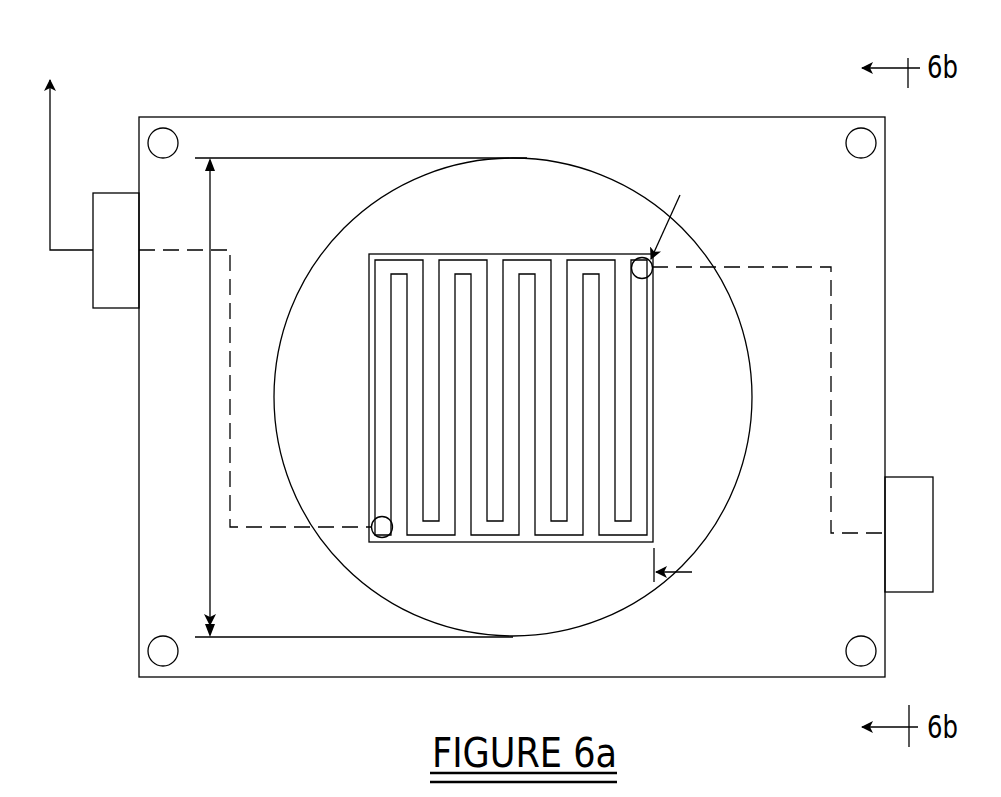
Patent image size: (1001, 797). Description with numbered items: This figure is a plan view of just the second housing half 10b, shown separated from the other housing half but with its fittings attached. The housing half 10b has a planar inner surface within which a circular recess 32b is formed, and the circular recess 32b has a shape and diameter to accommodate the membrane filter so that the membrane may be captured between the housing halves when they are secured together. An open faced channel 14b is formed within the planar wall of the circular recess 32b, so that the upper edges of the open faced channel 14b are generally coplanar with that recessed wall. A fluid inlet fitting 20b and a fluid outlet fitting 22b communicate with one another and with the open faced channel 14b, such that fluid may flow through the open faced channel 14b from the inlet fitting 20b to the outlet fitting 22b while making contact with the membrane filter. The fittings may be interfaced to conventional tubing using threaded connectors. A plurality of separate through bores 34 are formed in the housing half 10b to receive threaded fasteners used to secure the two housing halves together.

The housing half 10b is at (753, 106).
The open faced channel 14b is at (635, 508).
The fluid inlet fitting 20b is at (118, 200).
The fluid outlet fitting 22b is at (908, 485).
The circular recess 32b is at (321, 315).
The through bores 34 is at (163, 666).